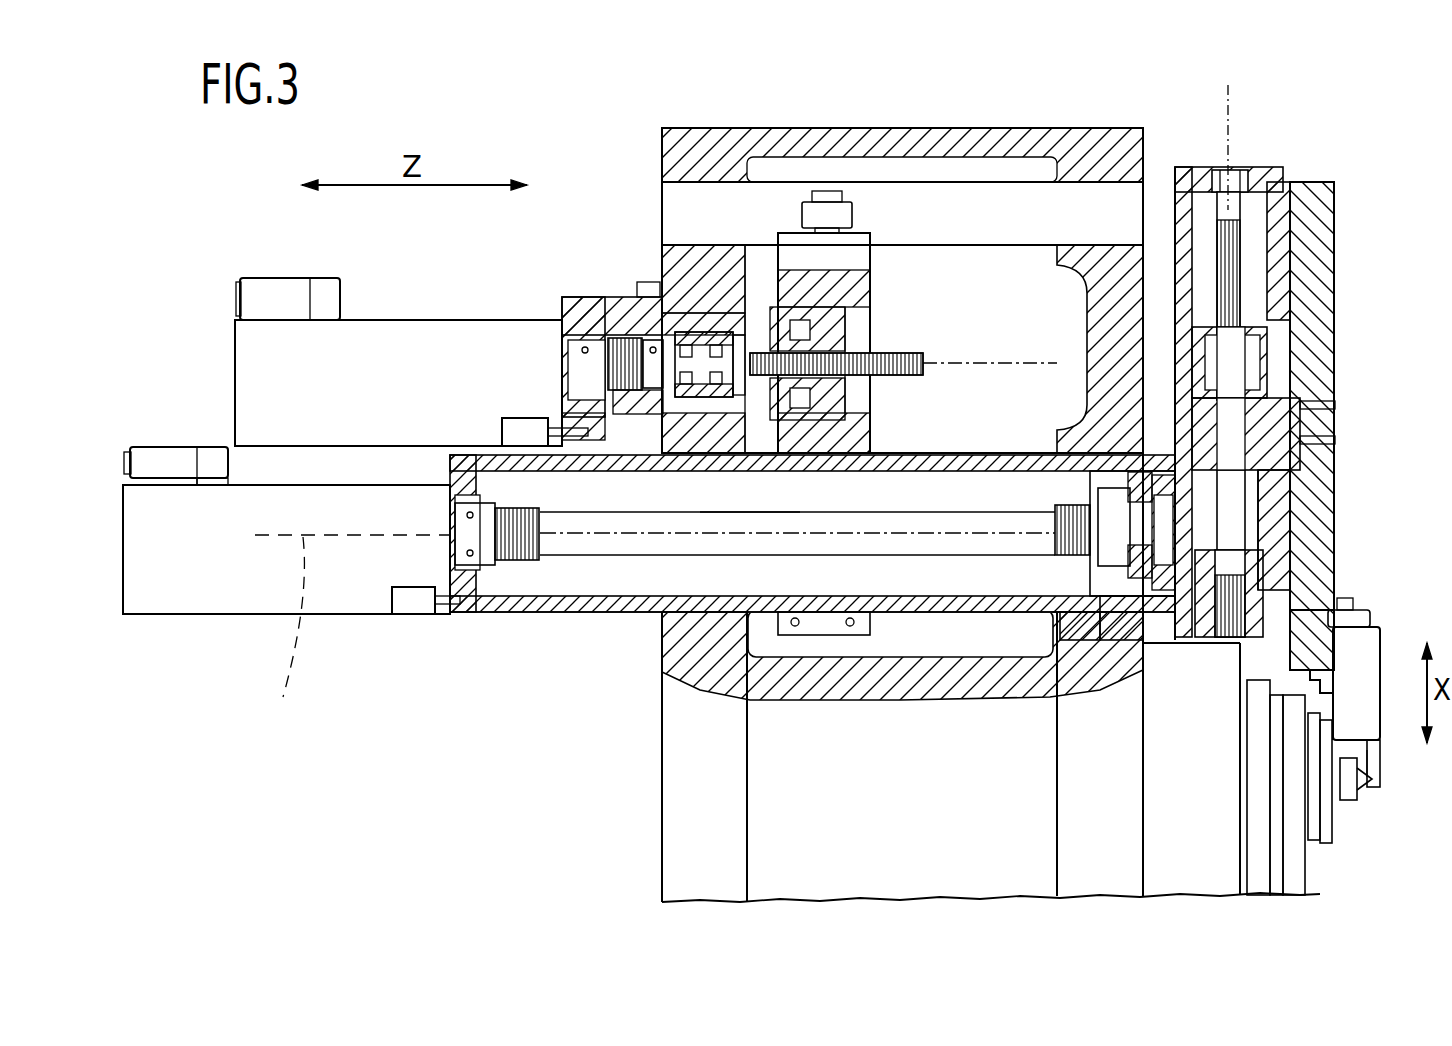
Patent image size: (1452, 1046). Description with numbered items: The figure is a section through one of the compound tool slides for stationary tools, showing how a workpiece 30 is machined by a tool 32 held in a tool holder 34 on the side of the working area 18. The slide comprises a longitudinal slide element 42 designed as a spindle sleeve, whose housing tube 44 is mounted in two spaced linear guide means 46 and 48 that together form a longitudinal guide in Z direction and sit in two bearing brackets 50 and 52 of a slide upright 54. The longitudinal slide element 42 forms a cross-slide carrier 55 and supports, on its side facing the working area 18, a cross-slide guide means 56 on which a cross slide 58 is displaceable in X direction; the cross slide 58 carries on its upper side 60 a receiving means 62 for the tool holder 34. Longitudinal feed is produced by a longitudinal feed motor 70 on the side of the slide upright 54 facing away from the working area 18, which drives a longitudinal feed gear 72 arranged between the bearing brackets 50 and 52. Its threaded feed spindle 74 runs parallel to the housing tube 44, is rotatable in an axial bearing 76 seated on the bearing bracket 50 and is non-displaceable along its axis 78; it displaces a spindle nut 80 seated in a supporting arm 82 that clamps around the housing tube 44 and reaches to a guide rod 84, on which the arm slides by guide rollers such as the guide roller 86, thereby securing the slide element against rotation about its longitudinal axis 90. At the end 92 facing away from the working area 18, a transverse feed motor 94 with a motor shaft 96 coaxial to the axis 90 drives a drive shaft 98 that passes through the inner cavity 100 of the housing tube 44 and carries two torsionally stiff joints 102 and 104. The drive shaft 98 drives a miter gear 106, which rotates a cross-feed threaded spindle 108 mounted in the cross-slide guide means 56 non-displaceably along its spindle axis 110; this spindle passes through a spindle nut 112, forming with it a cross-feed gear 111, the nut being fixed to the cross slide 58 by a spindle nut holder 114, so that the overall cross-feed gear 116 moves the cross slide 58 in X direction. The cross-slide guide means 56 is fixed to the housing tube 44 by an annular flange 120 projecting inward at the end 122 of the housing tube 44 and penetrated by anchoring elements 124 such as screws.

The working area 18 is at (1423, 426).
The workpiece 30 is at (1352, 800).
The tool 32 is at (1372, 780).
The tool holder 34 is at (1370, 660).
The longitudinal slide element 42 is at (503, 627).
The housing tube 44 is at (560, 607).
The linear guide means 46 is at (690, 612).
The linear guide means 48 is at (1115, 614).
The bearing bracket 50 is at (728, 770).
The bearing bracket 52 is at (1070, 800).
The slide upright 54 is at (1010, 118).
The cross-slide carrier 55 is at (1003, 420).
The cross-slide guide means 56 is at (1165, 305).
The cross slide 58 is at (1320, 232).
The upper side 60 is at (1337, 522).
The receiving means 62 is at (1350, 600).
The longitudinal feed motor 70 is at (433, 333).
The longitudinal feed gear 72 is at (756, 335).
The threaded feed spindle 74 is at (880, 350).
The axial bearing 76 is at (735, 330).
The axis 78 is at (966, 362).
The spindle nut 80 is at (850, 330).
The supporting arm 82 is at (858, 434).
The guide rod 84 is at (698, 196).
The guide roller 86 is at (838, 190).
The longitudinal axis 90 is at (628, 534).
The end 92 is at (487, 614).
The transverse feed motor 94 is at (232, 614).
The motor shaft 96 is at (352, 629).
The drive shaft 98 is at (740, 522).
The inner cavity 100 is at (912, 580).
The joint 102 is at (540, 530).
The joint 104 is at (1058, 525).
The miter gear 106 is at (1187, 578).
The cross-feed threaded spindle 108 is at (1240, 418).
The spindle axis 110 is at (1250, 290).
The cross-feed gear 111 is at (1293, 180).
The spindle nut 112 is at (1270, 342).
The spindle nut holder 114 is at (1305, 438).
The cross-feed gear 116 is at (1262, 483).
The annular flange 120 is at (1062, 636).
The end 122 is at (1153, 602).
The anchoring element 124 is at (1092, 616).